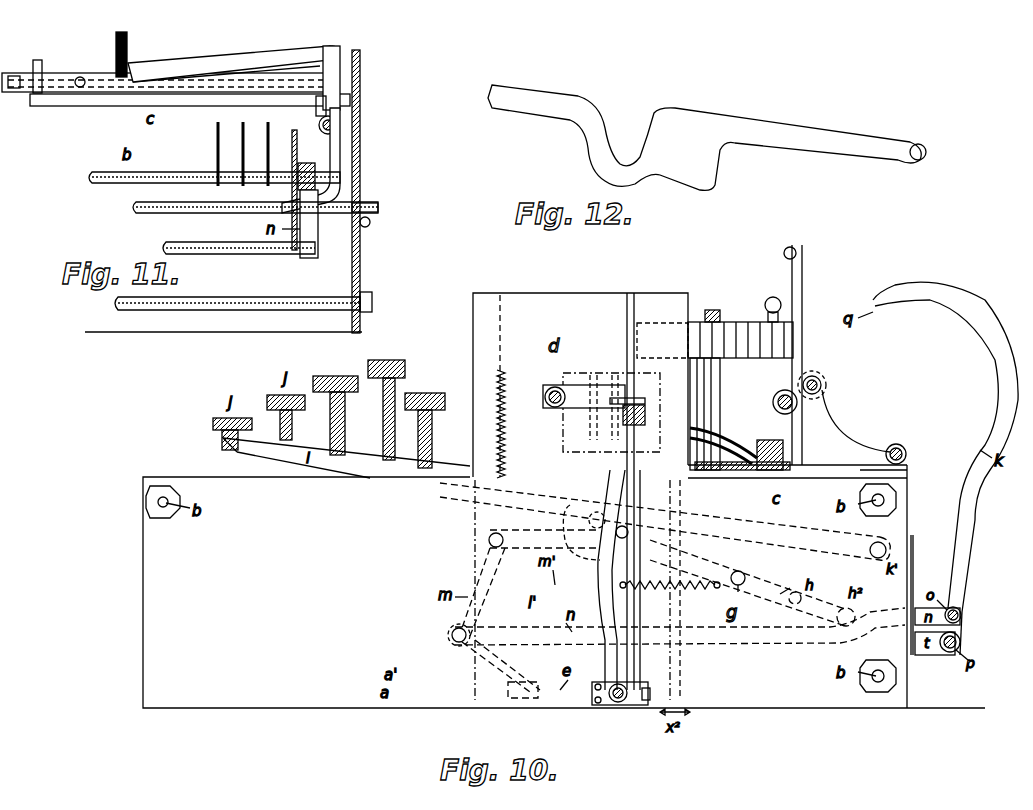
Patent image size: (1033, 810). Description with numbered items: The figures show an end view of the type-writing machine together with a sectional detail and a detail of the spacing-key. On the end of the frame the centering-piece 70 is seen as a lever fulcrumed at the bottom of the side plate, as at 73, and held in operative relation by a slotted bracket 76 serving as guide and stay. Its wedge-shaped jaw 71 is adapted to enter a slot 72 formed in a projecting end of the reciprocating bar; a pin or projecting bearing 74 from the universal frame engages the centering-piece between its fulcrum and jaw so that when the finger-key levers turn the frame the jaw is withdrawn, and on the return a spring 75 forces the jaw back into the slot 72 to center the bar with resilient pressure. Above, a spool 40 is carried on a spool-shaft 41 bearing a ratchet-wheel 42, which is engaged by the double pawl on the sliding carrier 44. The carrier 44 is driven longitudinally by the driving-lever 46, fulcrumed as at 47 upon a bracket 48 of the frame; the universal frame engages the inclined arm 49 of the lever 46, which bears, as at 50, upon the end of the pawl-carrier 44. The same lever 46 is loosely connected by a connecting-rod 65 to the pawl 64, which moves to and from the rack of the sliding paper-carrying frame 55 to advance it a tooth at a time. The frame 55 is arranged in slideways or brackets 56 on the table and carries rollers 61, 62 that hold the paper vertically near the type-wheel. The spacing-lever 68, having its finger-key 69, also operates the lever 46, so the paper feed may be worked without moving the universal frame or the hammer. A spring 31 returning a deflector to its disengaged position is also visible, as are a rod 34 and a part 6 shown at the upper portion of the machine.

In FIG. 11, the pawl 64 is at (60, 78).
In FIG. 11, the sliding carrier 44 is at (225, 86).
In FIG. 11, the connecting-rod 65 is at (233, 64).
In FIG. 11, the bearing point of lever on pawl-carrier 50 is at (340, 82).
In FIG. 11, the fulcrum 47 is at (337, 122).
In FIG. 11, the bracket 48 is at (318, 112).
In FIG. 11, the driving-lever 46 is at (337, 148).
In FIG. 11, the spacing-lever 68 is at (307, 190).
In FIG. 12, the spacing-lever 68 is at (707, 137).
In FIG. 10, the spacing-lever 68 is at (570, 518).
In FIG. 11, the inclined arm 49 is at (318, 215).
In FIG. 11, the pin or projecting bearing 74 is at (372, 203).
In FIG. 10, the pin or projecting bearing 74 is at (630, 534).
In FIG. 11, the spring 75 is at (370, 228).
In FIG. 10, the spring 75 is at (665, 592).
In FIG. 10, the finger-key 69 is at (428, 398).
In FIG. 10, the spring 31 is at (512, 424).
In FIG. 10, the centering-piece 70 is at (625, 466).
In FIG. 10, the rod 34 is at (642, 658).
In FIG. 10, the slotted bracket 76 is at (583, 410).
In FIG. 10, the slot 72 is at (632, 398).
In FIG. 10, the wedge-shaped jaw 71 is at (645, 406).
In FIG. 10, the spool 40 is at (740, 327).
In FIG. 10, the plate 6 is at (716, 402).
In FIG. 10, the spool-shaft 41 is at (720, 414).
In FIG. 10, the ratchet-wheel 42 is at (742, 473).
In FIG. 10, the roller 61 is at (778, 396).
In FIG. 10, the roller 62 is at (814, 376).
In FIG. 10, the sliding paper-carrying frame 55 is at (856, 421).
In FIG. 10, the slideways or brackets 56 is at (908, 464).
In FIG. 10, the fulcrum of centering-piece 73 is at (615, 706).